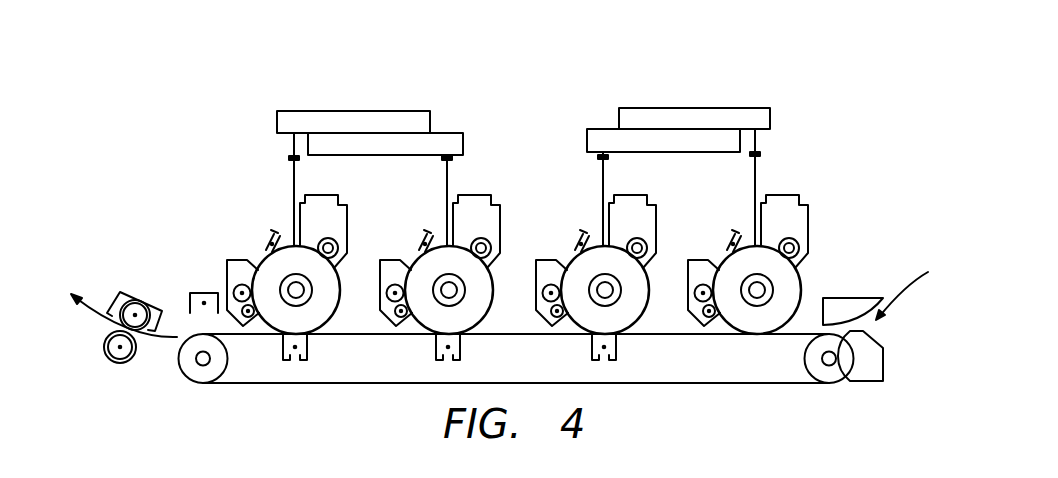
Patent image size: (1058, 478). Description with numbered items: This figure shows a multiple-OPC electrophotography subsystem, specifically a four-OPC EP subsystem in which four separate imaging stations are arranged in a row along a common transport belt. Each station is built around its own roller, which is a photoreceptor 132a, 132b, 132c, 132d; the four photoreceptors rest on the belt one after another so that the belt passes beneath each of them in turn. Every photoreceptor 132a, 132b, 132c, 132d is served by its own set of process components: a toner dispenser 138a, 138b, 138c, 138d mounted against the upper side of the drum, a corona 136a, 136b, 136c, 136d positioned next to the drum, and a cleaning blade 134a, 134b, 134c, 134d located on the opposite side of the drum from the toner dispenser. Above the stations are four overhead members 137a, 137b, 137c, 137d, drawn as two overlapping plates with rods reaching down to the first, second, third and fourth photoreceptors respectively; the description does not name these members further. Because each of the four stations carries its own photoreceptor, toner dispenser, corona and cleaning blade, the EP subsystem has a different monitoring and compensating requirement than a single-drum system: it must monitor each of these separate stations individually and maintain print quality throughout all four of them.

The photoreceptor 132a is at (314, 326).
The photoreceptor 132b is at (470, 307).
The photoreceptor 132c is at (626, 307).
The photoreceptor 132d is at (791, 290).
The cleaning blade 134a is at (254, 261).
The cleaning blade 134b is at (386, 268).
The cleaning blade 134c is at (542, 268).
The cleaning blade 134d is at (694, 268).
The corona 136a is at (269, 233).
The corona 136b is at (419, 211).
The corona 136c is at (575, 211).
The corona 136d is at (727, 211).
The exposure / light source head (first station) 137a is at (290, 112).
The exposure / light source head (second station) 137b is at (450, 133).
The exposure / light source head (third station) 137c is at (597, 131).
The exposure / light source head (fourth station) 137d is at (762, 108).
The toner dispenser 138a is at (340, 207).
The toner dispenser 138b is at (491, 210).
The toner dispenser 138c is at (647, 210).
The toner dispenser 138d is at (799, 210).